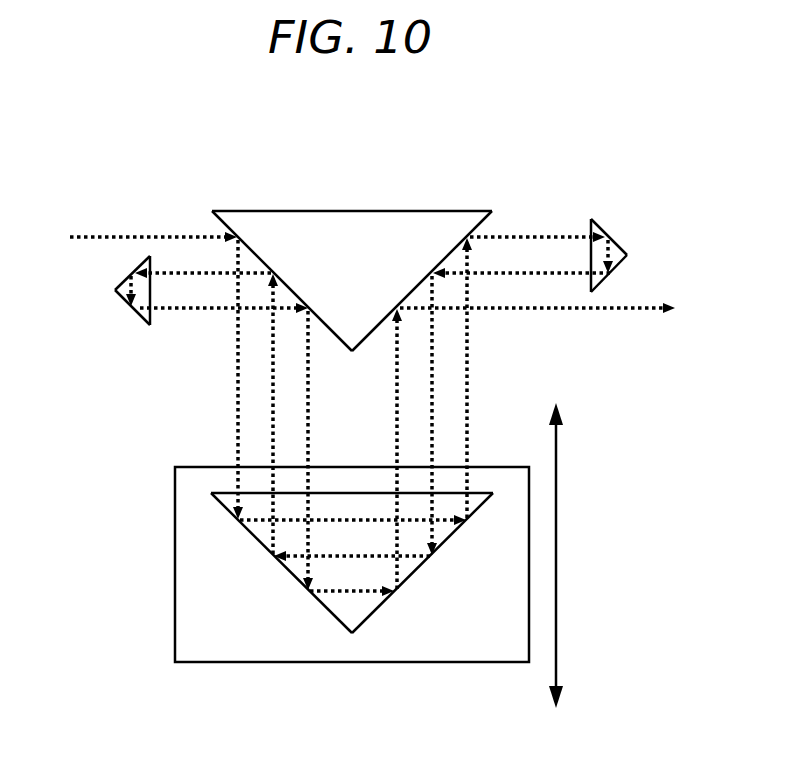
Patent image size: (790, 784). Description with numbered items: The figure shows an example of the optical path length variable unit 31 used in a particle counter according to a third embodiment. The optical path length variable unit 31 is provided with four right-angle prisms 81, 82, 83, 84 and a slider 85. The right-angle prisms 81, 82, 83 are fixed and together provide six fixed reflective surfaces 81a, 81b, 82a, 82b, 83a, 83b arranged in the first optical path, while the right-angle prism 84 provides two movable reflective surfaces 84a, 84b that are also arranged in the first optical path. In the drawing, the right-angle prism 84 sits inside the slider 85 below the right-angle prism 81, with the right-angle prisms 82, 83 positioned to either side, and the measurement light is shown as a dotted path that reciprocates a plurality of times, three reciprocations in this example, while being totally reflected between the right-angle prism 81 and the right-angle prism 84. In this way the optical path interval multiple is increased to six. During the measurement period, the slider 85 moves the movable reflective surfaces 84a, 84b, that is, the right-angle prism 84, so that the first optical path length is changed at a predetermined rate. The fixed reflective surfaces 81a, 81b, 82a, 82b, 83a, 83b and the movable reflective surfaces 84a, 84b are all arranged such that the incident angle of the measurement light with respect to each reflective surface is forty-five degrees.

The optical path length variable unit 31 is at (674, 112).
The right-angle prism 81 is at (355, 251).
The fixed reflective surface 81a is at (256, 253).
The fixed reflective surface 81b is at (452, 252).
The right-angle prism 82 is at (642, 246).
The fixed reflective surface 82a is at (599, 228).
The fixed reflective surface 82b is at (607, 277).
The right-angle prism 83 is at (92, 300).
The fixed reflective surface 83a is at (135, 270).
The fixed reflective surface 83b is at (142, 320).
The right-angle prism 84 is at (354, 575).
The movable reflective surface 84a is at (243, 527).
The movable reflective surface 84b is at (458, 530).
The slider 85 is at (502, 475).